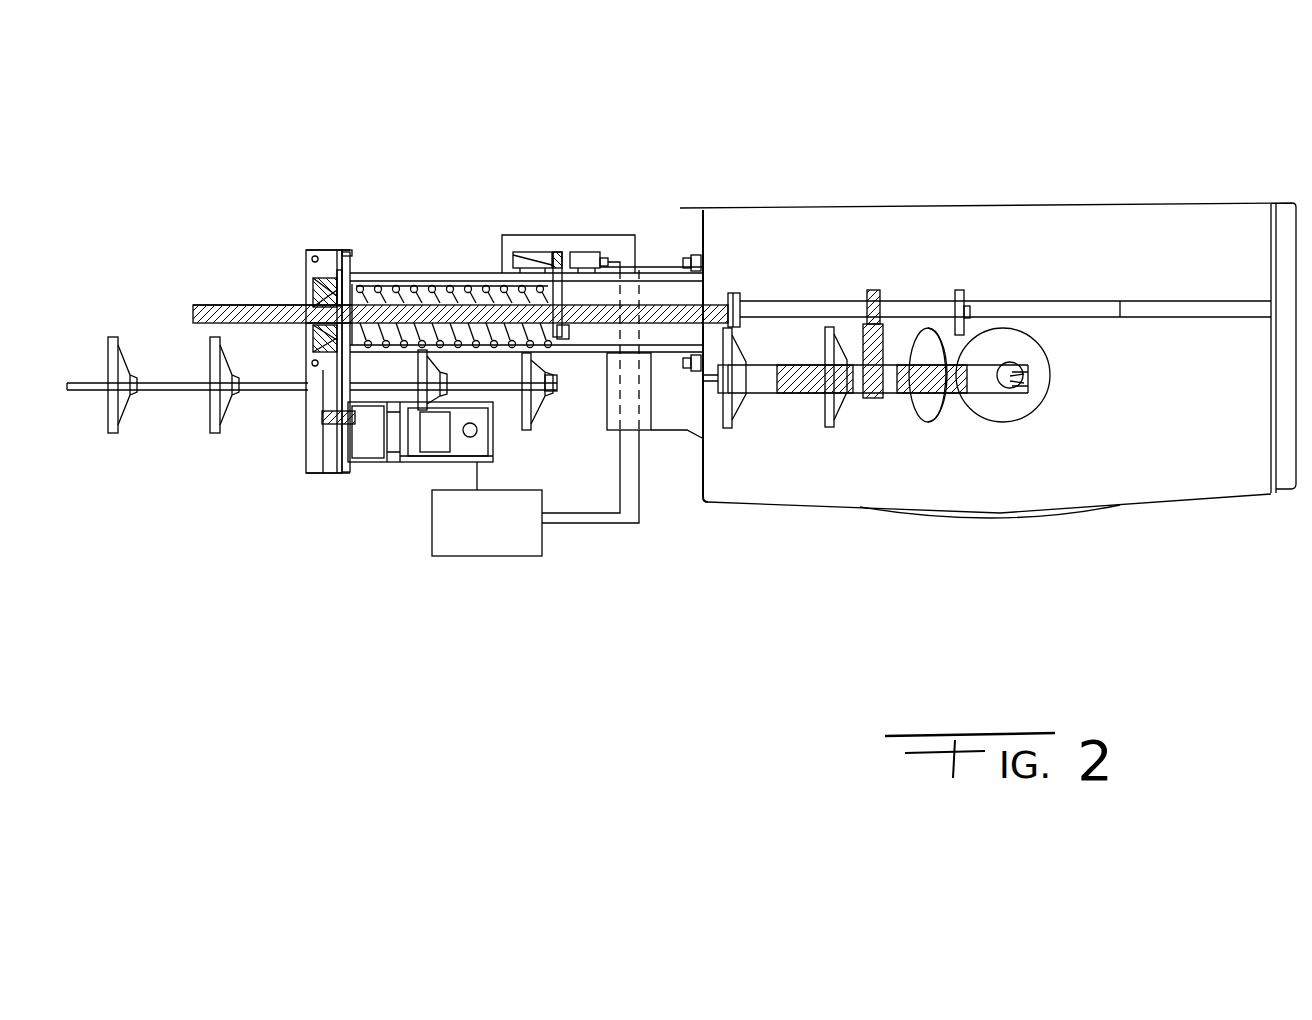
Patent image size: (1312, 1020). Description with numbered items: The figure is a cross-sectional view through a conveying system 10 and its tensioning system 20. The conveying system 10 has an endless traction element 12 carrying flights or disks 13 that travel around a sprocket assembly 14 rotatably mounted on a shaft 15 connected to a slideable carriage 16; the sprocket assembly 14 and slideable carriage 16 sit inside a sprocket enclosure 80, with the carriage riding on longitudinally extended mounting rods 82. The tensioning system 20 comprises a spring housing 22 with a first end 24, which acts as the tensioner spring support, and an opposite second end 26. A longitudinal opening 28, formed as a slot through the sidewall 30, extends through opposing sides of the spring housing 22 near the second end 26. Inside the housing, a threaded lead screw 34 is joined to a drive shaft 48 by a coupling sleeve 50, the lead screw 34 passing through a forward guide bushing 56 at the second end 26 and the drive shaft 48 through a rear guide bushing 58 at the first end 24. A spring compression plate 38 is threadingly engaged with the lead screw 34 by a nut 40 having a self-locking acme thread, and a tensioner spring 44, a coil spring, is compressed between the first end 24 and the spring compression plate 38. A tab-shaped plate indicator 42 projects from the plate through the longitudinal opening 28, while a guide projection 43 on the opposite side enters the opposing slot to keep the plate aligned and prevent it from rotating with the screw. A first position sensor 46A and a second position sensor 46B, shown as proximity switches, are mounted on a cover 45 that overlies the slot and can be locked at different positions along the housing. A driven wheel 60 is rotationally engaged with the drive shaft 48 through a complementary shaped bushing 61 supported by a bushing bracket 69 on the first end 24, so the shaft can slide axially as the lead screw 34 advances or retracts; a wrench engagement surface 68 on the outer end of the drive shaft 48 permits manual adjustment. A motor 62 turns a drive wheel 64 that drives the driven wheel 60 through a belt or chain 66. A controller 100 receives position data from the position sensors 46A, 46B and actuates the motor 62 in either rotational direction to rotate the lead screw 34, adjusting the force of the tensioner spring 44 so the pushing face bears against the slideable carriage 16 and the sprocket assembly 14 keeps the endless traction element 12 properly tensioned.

The conveying system 10 is at (723, 635).
The endless traction element 12 is at (82, 392).
The flights or disks 13 is at (210, 437).
The sprocket assembly 14 is at (775, 399).
The shaft 15 is at (876, 289).
The slideable carriage 16 is at (773, 307).
The tensioning system 20 is at (362, 466).
The spring housing 22 is at (373, 281).
The first end 24 is at (350, 256).
The second end 26 is at (692, 392).
The longitudinal opening 28 is at (506, 291).
The sidewall 30 is at (325, 383).
The lead screw 34 is at (433, 292).
The spring compression plate 38 is at (566, 342).
The nut 40 is at (578, 347).
The plate indicator 42 is at (560, 265).
The guide projection 43 is at (546, 396).
The tensioner spring 44 is at (413, 292).
The cover 45 is at (647, 265).
The first position sensor 46A is at (522, 248).
The second position sensor 46B is at (600, 247).
The drive shaft 48 is at (266, 312).
The coupling sleeve 50 is at (352, 356).
The forward guide bushing 56 is at (706, 290).
The rear guide bushing 58 is at (345, 290).
The driven wheel 60 is at (322, 275).
The complementary shaped bushing 61 is at (327, 330).
The motor 62 is at (430, 452).
The drive wheel 64 is at (327, 437).
The belt or chain 66 is at (323, 382).
The wrench engagement surface 68 is at (197, 311).
The bushing bracket 69 is at (320, 247).
The sprocket enclosure 80 is at (1153, 208).
The mounting rods 82 is at (1173, 308).
The controller 100 is at (503, 538).